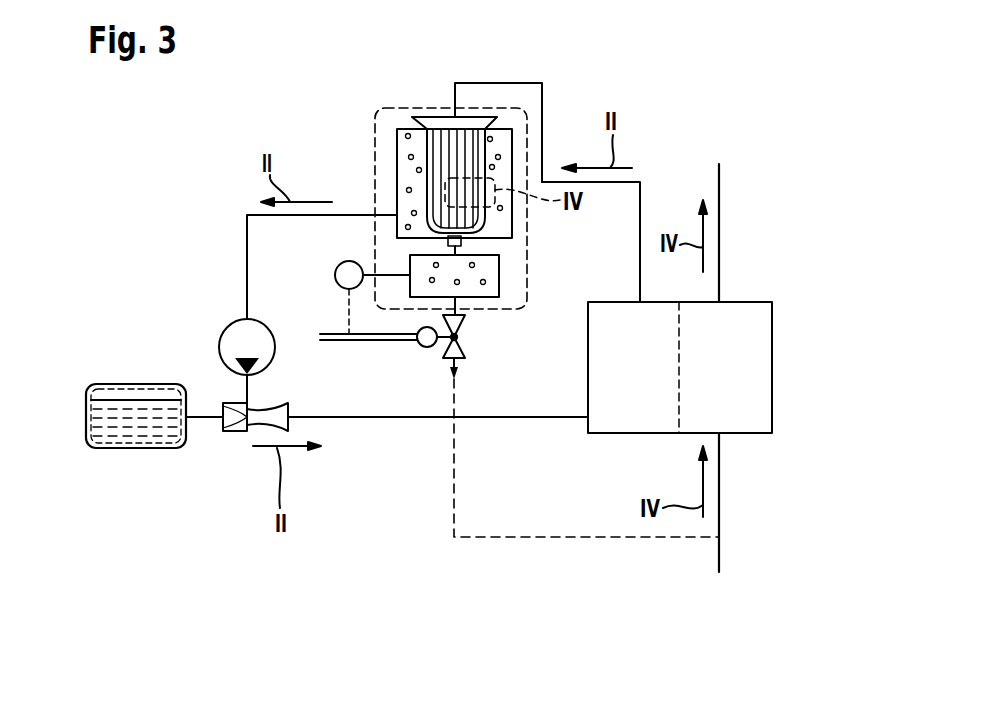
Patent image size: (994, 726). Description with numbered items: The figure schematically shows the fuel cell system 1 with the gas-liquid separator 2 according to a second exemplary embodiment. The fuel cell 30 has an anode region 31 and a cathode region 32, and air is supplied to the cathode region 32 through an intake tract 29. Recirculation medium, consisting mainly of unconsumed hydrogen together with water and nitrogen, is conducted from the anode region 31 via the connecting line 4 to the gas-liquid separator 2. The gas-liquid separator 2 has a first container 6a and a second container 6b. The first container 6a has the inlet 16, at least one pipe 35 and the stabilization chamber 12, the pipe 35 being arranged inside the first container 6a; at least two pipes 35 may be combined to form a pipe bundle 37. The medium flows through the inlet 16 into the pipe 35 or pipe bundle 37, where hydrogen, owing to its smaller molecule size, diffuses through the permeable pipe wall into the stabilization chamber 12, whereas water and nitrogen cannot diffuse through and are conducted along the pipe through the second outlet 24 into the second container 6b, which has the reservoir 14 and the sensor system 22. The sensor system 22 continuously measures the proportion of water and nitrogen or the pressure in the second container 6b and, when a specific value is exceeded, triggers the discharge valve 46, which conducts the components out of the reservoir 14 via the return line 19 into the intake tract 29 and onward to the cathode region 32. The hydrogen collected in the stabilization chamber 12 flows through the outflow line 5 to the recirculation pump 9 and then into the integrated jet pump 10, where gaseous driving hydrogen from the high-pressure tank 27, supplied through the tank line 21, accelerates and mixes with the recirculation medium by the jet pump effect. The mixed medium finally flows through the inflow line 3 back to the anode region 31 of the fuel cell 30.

The fuel cell system 1 is at (715, 120).
The gas-liquid separator 2 is at (371, 108).
The inflow line 3 is at (352, 420).
The connecting line 4 is at (640, 195).
The outflow line 5 is at (247, 248).
The first container 6a is at (512, 222).
The second container 6b is at (499, 275).
The recirculation pump 9 is at (226, 328).
The integrated jet pump 10 is at (233, 432).
The stabilization chamber 12 is at (400, 165).
The reservoir 14 is at (488, 290).
The inlet 16 is at (432, 118).
The return line 19 is at (453, 520).
The tank line 21 is at (201, 420).
The sensor system 22 is at (335, 275).
The second outlet 24 is at (462, 241).
The tank 27 is at (125, 450).
The intake tract 29 is at (719, 520).
The fuel cell 30 is at (748, 284).
The anode region 31 is at (624, 415).
The cathode region 32 is at (750, 415).
The pipe 35 is at (387, 179).
The pipe bundle 37 is at (426, 145).
The discharge valve 46 is at (460, 348).